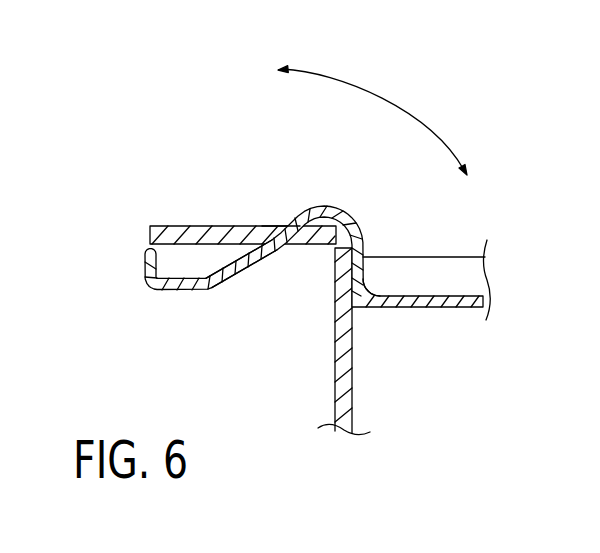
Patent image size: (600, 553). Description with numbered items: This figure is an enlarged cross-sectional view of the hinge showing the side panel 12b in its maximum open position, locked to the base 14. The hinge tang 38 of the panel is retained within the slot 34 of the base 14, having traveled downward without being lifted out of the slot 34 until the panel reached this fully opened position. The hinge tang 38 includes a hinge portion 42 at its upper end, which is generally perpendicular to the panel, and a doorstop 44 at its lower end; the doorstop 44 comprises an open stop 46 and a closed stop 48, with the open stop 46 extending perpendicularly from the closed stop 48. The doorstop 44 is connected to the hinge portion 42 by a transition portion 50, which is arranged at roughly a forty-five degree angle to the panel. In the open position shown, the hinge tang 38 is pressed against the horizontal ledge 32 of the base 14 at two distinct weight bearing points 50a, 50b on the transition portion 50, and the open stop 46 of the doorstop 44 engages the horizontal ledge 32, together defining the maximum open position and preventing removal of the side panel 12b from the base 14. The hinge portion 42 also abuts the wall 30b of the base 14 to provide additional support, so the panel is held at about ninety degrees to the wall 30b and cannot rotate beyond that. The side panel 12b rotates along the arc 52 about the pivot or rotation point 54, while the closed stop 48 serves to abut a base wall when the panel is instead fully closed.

The arc 52 is at (392, 93).
The hinge tang 38 is at (313, 178).
The weight bearing point 50b is at (305, 221).
The slot 34 is at (270, 223).
The horizontal ledge 32 is at (177, 226).
The hinge portion 42 is at (362, 252).
The open stop 46 is at (146, 260).
The weight bearing point 50a is at (258, 242).
The transition portion 50 is at (238, 268).
The pivot point 54 is at (294, 244).
The closed stop 48 is at (173, 291).
The doorstop 44 is at (271, 243).
The base 14 is at (252, 362).
The side panel 12b is at (423, 309).
The wall 30b is at (352, 396).